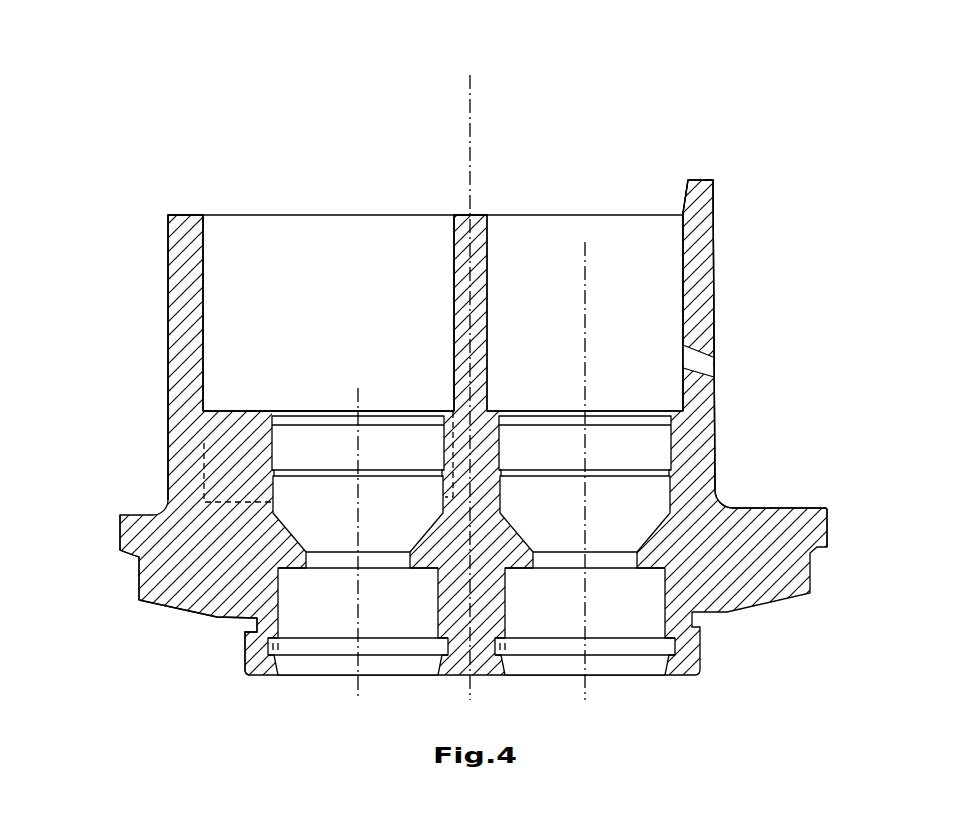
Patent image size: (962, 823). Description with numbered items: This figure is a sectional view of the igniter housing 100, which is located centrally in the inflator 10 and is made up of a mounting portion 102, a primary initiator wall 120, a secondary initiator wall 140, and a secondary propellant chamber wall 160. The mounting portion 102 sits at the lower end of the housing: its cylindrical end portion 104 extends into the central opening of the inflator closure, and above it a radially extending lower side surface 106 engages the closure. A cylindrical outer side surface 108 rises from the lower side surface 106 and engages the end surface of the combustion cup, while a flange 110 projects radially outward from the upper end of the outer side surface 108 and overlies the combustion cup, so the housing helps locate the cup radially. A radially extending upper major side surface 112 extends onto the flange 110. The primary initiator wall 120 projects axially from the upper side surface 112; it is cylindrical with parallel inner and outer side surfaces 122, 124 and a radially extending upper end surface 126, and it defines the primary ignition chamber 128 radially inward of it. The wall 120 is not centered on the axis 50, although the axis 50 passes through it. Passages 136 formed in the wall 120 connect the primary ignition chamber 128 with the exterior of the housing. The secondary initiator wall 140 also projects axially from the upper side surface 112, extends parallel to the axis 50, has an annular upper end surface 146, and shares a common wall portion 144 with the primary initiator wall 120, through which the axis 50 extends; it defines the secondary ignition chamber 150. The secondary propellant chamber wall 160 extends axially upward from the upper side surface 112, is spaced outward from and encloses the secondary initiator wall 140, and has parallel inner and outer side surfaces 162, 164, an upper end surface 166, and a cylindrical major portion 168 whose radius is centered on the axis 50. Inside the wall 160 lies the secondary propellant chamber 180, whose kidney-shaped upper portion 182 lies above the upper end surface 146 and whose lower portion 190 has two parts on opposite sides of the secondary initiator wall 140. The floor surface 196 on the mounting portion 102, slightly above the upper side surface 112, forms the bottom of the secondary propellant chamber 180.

The inflator 10 is at (853, 244).
The axis 50 is at (472, 77).
The igniter housing 100 is at (794, 195).
The mounting portion 102 is at (750, 504).
The cylindrical end portion 104 is at (260, 662).
The lower side surface 106 is at (210, 617).
The cylindrical outer side surface 108 is at (137, 580).
The flange 110 is at (827, 510).
The upper major side surface 112 is at (784, 508).
The primary initiator wall 120 is at (719, 392).
The inner side surface 122 is at (682, 248).
The outer side surface 124 is at (717, 272).
The upper end surface 126 is at (712, 180).
The primary ignition chamber 128 is at (606, 324).
The passages 136 is at (700, 362).
The secondary initiator wall 140 is at (260, 408).
The common wall portion 144 is at (463, 410).
The upper end surface 146 is at (222, 410).
The secondary ignition chamber 150 is at (368, 457).
The secondary propellant chamber wall 160 is at (166, 263).
The inner side surface 162 is at (205, 320).
The outer side surface 164 is at (167, 372).
The upper end surface 166 is at (189, 215).
The cylindrical major portion 168 is at (187, 337).
The secondary propellant chamber 180 is at (346, 370).
The upper portion of secondary propellant chamber 182 is at (248, 262).
The lower portion of secondary propellant chamber 190 is at (233, 443).
The floor surface 196 is at (235, 502).